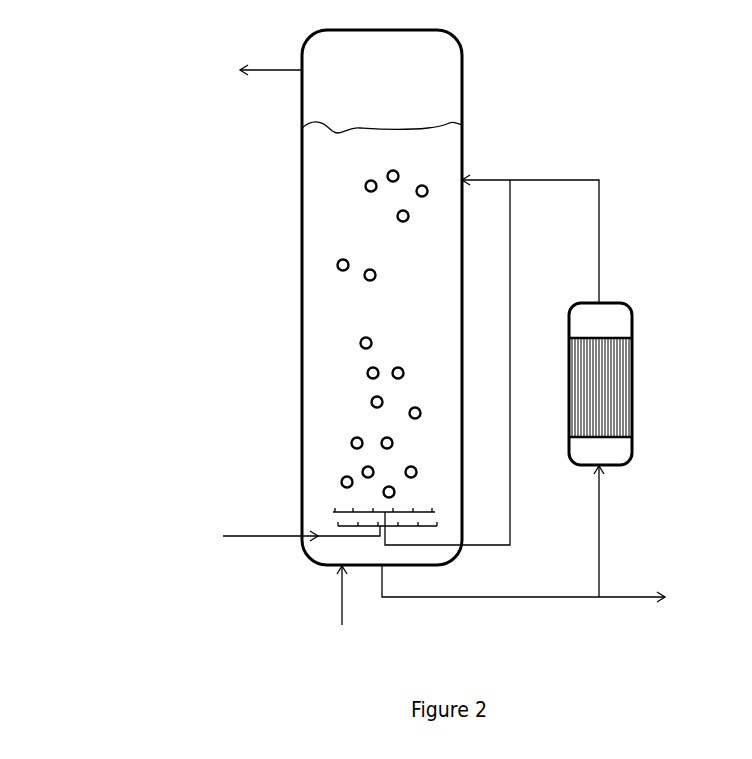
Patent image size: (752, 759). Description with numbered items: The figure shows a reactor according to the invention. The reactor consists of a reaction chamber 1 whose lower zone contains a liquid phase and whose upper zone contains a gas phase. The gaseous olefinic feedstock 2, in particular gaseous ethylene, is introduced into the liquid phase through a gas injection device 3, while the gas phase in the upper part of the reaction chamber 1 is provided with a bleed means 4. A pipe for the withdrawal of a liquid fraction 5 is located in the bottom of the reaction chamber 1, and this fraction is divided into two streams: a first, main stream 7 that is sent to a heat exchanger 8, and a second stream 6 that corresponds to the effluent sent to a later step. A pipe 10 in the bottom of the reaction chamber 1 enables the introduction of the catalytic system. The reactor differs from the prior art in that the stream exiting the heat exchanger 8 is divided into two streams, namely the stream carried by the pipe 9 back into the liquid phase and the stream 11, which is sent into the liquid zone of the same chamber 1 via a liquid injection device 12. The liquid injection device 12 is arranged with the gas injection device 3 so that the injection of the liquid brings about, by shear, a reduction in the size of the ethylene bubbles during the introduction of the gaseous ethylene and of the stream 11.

The reaction chamber 1 is at (302, 318).
The gaseous olefinic feedstock 2 is at (252, 536).
The gas injection device 3 is at (333, 510).
The bleed means 4 is at (275, 70).
The pipe for the withdrawal of a liquid fraction 5 is at (508, 598).
The second stream 6 is at (641, 598).
The main stream 7 is at (599, 515).
The heat exchanger 8 is at (585, 300).
The pipe 9 is at (478, 183).
The pipe 10 is at (338, 593).
The stream 11 is at (480, 548).
The liquid injection device 12 is at (435, 512).